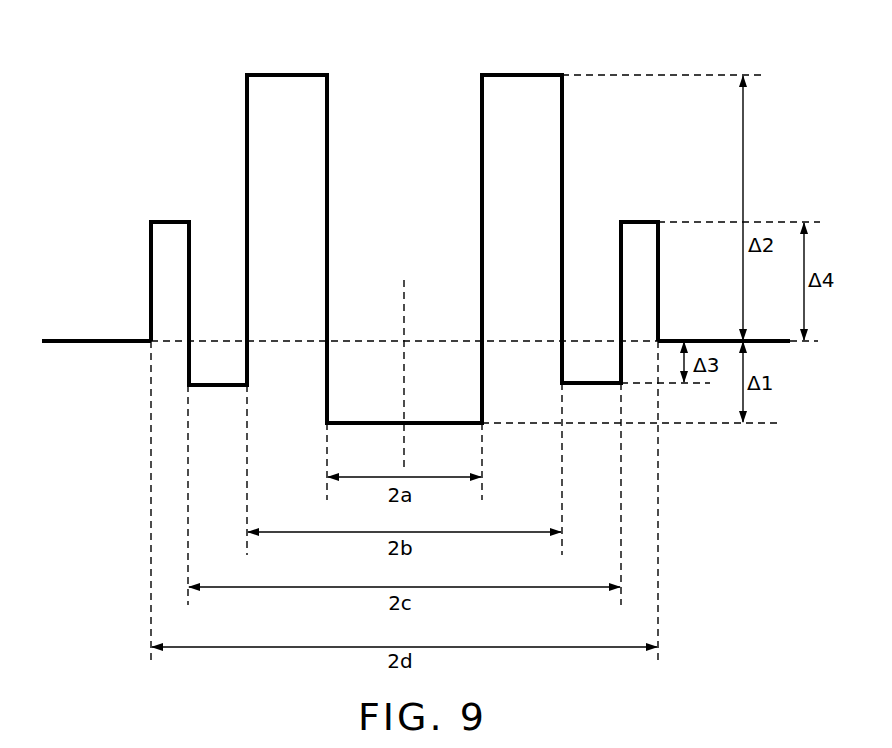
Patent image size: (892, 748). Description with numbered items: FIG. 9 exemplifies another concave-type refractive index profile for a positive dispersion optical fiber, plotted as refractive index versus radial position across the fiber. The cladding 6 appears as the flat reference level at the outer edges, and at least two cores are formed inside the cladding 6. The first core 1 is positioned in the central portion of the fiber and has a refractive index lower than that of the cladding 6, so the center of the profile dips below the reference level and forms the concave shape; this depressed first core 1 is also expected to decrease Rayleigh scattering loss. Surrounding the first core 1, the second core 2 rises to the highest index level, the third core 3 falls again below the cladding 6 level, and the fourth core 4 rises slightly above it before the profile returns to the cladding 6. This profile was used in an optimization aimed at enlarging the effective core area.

The first core 1 is at (420, 423).
The second core 2 is at (287, 74).
The third core 3 is at (219, 383).
The fourth core 4 is at (172, 220).
The cladding 6 is at (93, 339).